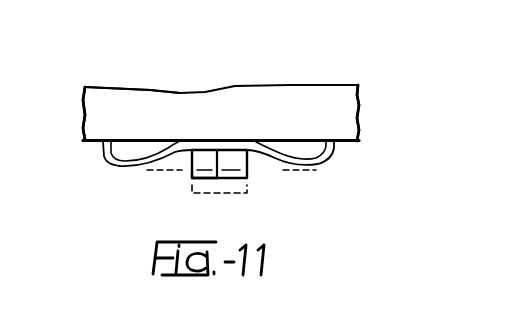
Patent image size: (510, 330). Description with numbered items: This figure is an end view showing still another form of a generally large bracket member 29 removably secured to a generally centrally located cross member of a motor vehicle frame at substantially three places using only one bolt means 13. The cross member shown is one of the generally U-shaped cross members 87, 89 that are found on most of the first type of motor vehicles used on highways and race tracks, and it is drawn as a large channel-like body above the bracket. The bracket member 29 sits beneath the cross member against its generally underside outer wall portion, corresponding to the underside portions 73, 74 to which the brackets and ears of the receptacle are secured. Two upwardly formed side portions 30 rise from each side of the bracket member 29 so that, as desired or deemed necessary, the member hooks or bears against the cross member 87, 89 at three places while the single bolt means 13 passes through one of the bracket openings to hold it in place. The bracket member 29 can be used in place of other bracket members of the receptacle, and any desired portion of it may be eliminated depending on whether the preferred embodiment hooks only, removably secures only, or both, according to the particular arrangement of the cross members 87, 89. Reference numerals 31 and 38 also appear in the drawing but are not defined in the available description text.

The bolt means 13 is at (191, 173).
The large bracket member 29 is at (279, 166).
The upwardly formed side portions 30 is at (102, 148).
The diaphragm 31 is at (150, 173).
The sensing element 38 is at (198, 194).
The underside portion 73 is at (84, 141).
The underside portion 74 is at (354, 142).
The U-shaped cross member 87 is at (93, 92).
The U-shaped cross member 89 is at (342, 92).